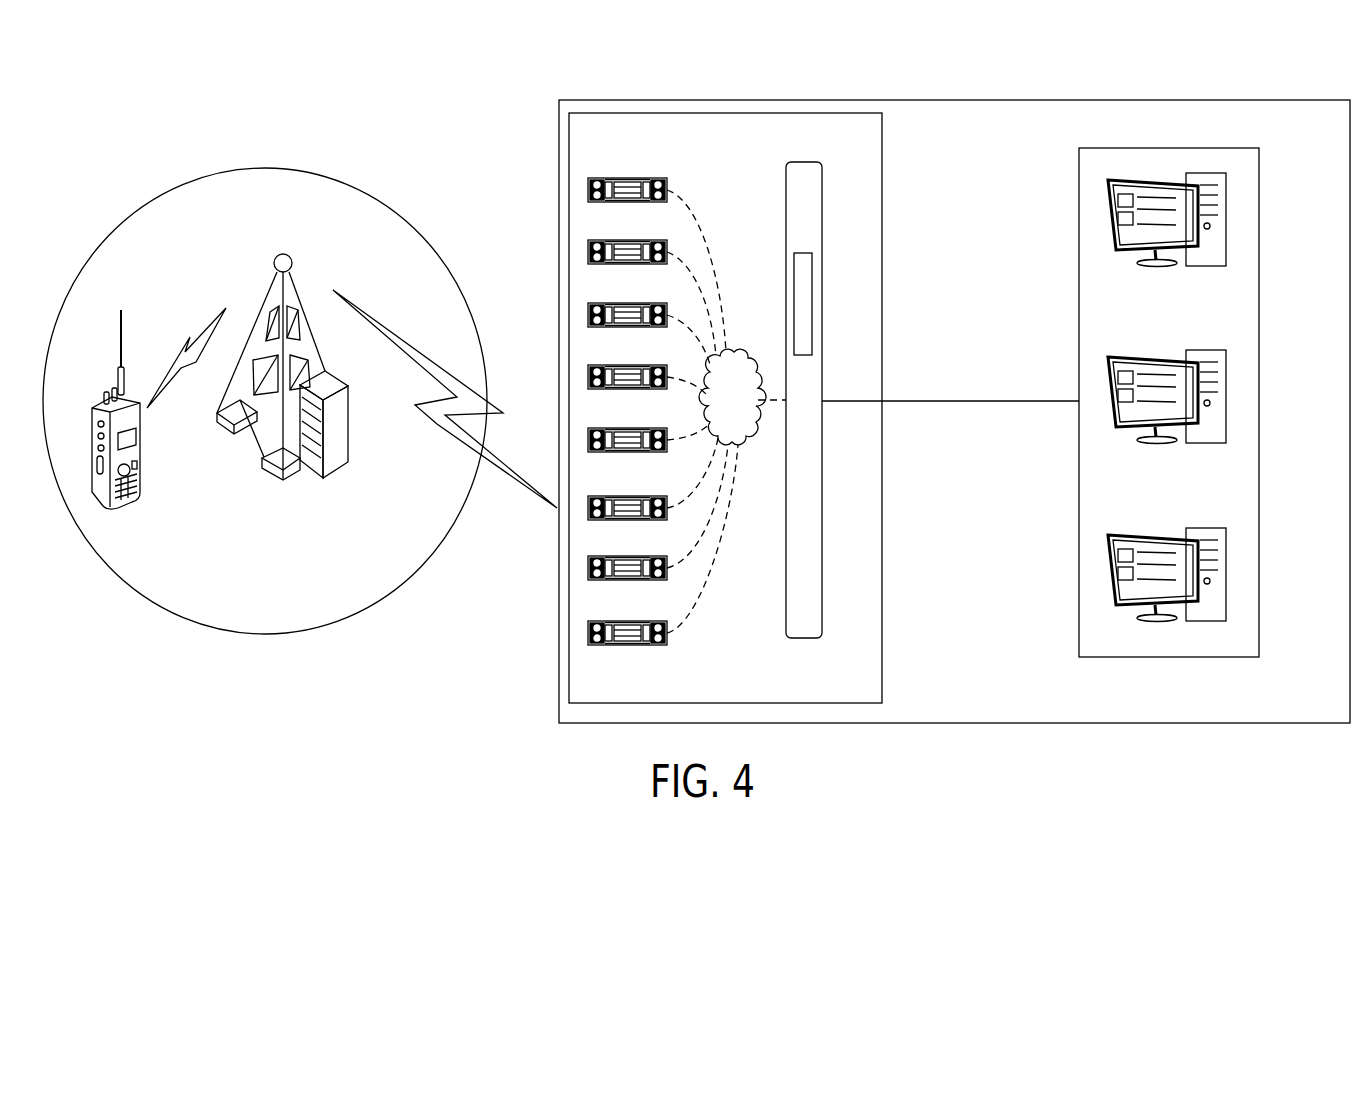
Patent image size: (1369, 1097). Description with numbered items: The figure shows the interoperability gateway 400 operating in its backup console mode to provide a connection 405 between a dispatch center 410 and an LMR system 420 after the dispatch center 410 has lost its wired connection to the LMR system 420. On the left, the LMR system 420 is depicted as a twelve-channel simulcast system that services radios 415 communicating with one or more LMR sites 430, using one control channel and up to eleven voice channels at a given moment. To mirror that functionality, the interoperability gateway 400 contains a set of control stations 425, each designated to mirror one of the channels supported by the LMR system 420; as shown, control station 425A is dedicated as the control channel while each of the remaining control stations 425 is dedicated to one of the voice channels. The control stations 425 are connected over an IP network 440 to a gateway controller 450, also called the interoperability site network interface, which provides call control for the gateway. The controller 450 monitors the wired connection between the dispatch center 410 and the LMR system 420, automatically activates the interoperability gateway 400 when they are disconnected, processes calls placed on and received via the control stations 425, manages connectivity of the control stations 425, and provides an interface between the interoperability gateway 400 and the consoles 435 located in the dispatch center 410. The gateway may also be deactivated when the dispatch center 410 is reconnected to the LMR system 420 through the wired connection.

The interoperability gateway 400 is at (882, 214).
The connection 405 is at (497, 472).
The dispatch center 410 is at (1073, 100).
The radios 415 is at (122, 333).
The LMR system 420 is at (158, 197).
The control stations 425 is at (588, 252).
The control station 425A is at (651, 177).
The LMR sites 430 is at (291, 258).
The consoles 435 is at (1259, 268).
The IP network 440 is at (745, 353).
The gateway controller 450 is at (786, 628).